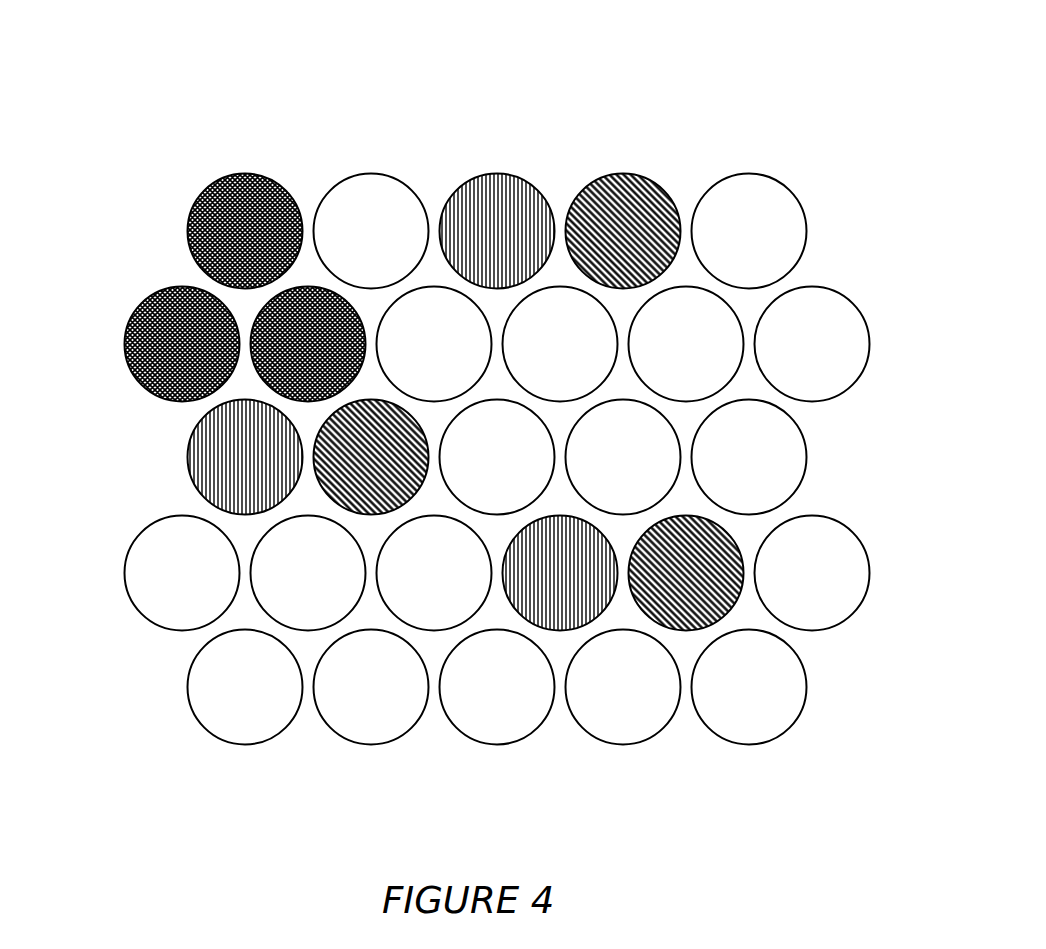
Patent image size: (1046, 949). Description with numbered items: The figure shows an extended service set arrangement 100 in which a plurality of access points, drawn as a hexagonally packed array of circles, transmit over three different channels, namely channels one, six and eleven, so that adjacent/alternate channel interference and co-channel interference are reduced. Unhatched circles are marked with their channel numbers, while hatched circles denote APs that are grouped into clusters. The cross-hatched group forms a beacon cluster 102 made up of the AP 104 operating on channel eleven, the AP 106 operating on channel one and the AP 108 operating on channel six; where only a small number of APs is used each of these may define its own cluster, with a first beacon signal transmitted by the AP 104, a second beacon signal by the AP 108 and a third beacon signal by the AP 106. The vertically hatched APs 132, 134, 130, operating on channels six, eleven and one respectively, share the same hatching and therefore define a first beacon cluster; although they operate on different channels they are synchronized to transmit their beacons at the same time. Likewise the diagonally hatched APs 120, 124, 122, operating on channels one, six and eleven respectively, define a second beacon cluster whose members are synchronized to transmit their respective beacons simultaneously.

The fiber arrangement 100 is at (537, 128).
The beacon cluster 102 is at (155, 234).
The AP 104 is at (245, 173).
The AP 106 is at (124, 343).
The AP 108 is at (250, 340).
The AP 120 is at (318, 480).
The AP 122 is at (748, 556).
The AP 124 is at (624, 174).
The AP 130 is at (558, 631).
The AP 132 is at (497, 174).
The AP 134 is at (187, 457).